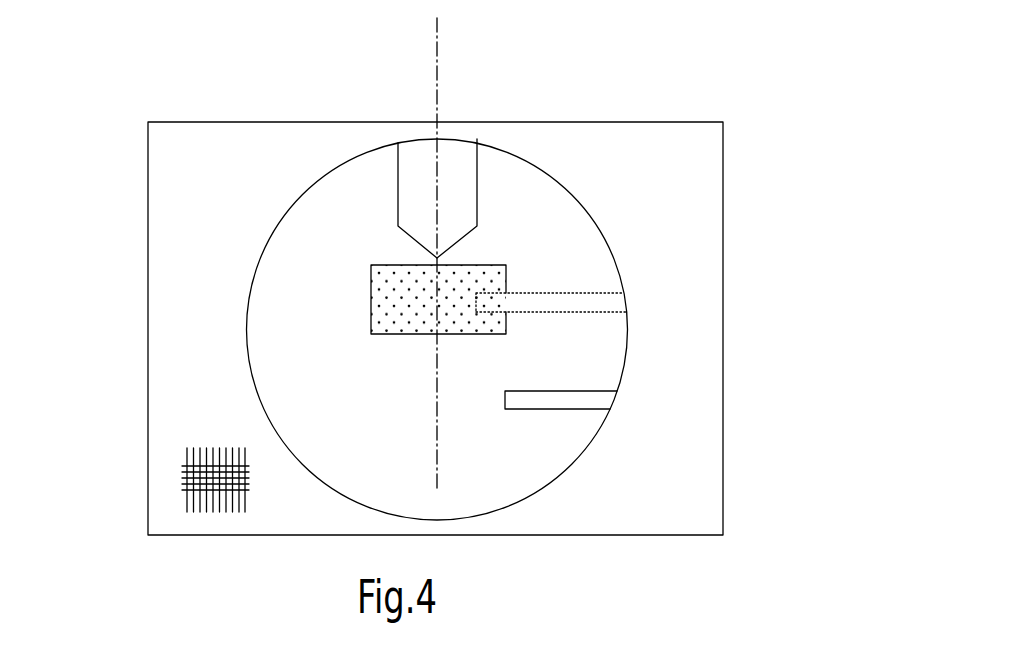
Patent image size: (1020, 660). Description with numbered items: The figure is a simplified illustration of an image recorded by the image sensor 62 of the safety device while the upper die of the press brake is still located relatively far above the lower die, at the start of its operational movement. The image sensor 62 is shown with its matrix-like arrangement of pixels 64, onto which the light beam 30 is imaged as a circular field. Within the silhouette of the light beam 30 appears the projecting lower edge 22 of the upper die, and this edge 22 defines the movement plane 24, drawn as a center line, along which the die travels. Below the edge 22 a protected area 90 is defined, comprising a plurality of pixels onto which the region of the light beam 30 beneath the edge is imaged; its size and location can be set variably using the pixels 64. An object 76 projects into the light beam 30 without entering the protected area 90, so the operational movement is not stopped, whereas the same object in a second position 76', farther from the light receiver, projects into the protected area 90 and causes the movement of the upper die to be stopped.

The projecting edge 22 is at (437, 258).
The movement plane 24 is at (438, 55).
The light beam 30 is at (600, 231).
The image sensor 62 is at (148, 344).
The pixels 64 is at (200, 482).
The object 76 is at (676, 373).
The object in second position 76' is at (671, 267).
The protected area 90 is at (386, 298).